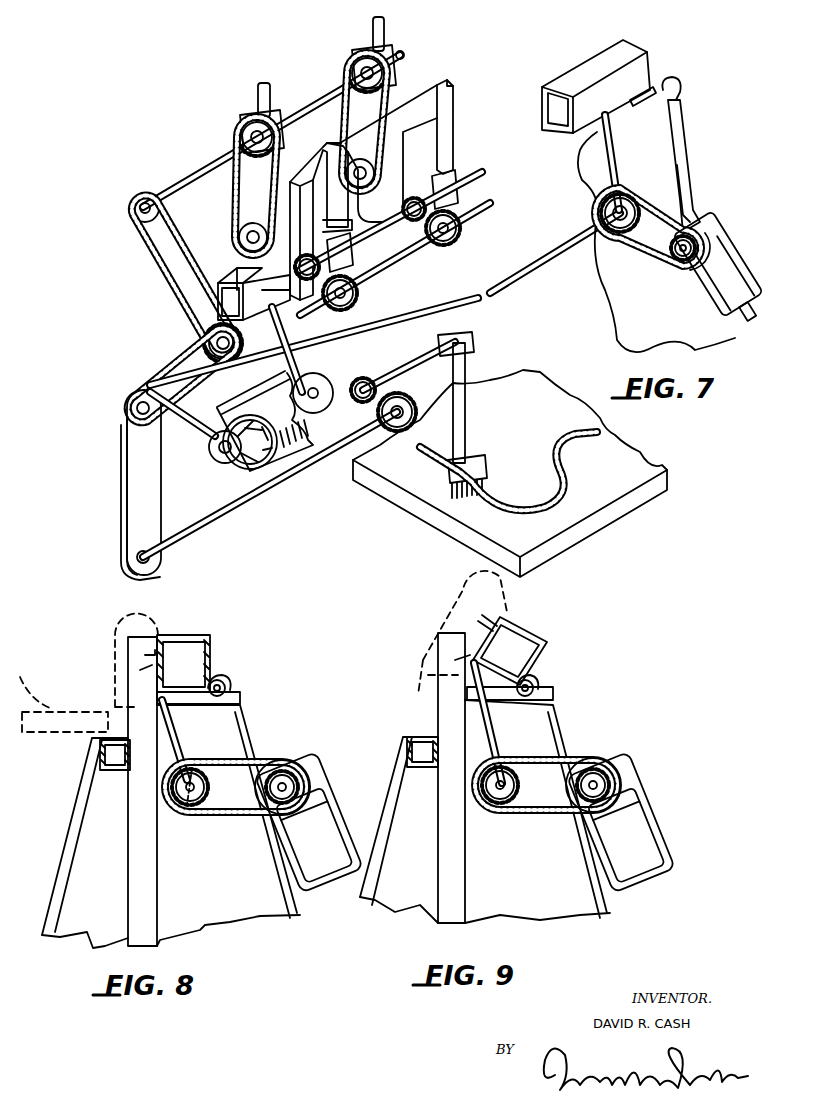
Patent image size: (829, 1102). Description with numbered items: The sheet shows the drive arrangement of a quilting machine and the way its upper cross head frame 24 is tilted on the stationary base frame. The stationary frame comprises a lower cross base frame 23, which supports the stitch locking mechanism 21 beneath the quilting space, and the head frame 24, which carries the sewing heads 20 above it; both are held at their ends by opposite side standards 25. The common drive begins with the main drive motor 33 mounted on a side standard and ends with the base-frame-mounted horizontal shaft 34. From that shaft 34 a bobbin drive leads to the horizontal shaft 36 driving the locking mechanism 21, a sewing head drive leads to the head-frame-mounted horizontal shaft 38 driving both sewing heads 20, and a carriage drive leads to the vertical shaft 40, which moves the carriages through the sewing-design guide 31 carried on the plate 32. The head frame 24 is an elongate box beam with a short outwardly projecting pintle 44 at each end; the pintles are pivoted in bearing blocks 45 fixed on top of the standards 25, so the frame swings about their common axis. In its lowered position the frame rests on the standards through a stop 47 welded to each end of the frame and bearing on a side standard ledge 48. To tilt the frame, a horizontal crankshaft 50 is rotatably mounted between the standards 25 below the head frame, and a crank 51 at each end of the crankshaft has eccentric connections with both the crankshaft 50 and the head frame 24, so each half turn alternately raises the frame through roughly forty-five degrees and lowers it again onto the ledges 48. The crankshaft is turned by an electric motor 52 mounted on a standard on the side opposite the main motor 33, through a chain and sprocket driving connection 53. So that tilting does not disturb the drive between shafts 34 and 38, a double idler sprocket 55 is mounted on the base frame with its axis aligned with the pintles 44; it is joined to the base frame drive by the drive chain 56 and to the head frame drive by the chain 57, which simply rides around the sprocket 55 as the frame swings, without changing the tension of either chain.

In FIG. 7, the sewing head 20 is at (455, 102).
In FIG. 8, the sewing head 20 is at (112, 638).
In FIG. 9, the sewing head 20 is at (450, 606).
In FIG. 7, the locking mechanism 21 is at (455, 172).
In FIG. 8, the lower cross base frame 23 is at (118, 772).
In FIG. 9, the lower cross base frame 23 is at (428, 768).
In FIG. 7, the upper cross head frame 24 is at (228, 266).
In FIG. 8, the upper cross head frame 24 is at (212, 648).
In FIG. 9, the upper cross head frame 24 is at (530, 630).
In FIG. 7, the side standards 25 is at (690, 205).
In FIG. 8, the side standards 25 is at (50, 882).
In FIG. 9, the side standards 25 is at (470, 885).
In FIG. 7, the sewing-design guide 31 is at (554, 433).
In FIG. 7, the plate 32 is at (617, 490).
In FIG. 7, the main drive motor 33 is at (278, 411).
In FIG. 7, the main horizontal shaft 34 is at (377, 280).
In FIG. 7, the horizontal shaft 36 is at (483, 170).
In FIG. 7, the horizontal shaft 38 is at (213, 166).
In FIG. 7, the vertical shaft 40 is at (466, 427).
In FIG. 7, the pintle 44 is at (646, 118).
In FIG. 8, the pintle 44 is at (218, 705).
In FIG. 9, the pintle 44 is at (518, 700).
In FIG. 7, the bearing block 45 is at (674, 82).
In FIG. 8, the bearing block 45 is at (230, 676).
In FIG. 9, the bearing block 45 is at (527, 685).
In FIG. 8, the stop 47 is at (144, 646).
In FIG. 9, the stop 47 is at (493, 612).
In FIG. 8, the ledge 48 is at (144, 676).
In FIG. 9, the ledge 48 is at (455, 647).
In FIG. 7, the crankshaft 50 is at (533, 270).
In FIG. 8, the crankshaft 50 is at (175, 818).
In FIG. 7, the crank 51 is at (292, 343).
In FIG. 8, the crank 51 is at (175, 718).
In FIG. 9, the crank 51 is at (488, 723).
In FIG. 7, the electric motor 52 is at (739, 301).
In FIG. 8, the electric motor 52 is at (319, 850).
In FIG. 9, the electric motor 52 is at (635, 853).
In FIG. 7, the chain and sprocket driving connection 53 is at (650, 252).
In FIG. 8, the chain and sprocket driving connection 53 is at (219, 815).
In FIG. 9, the chain and sprocket driving connection 53 is at (523, 812).
In FIG. 7, the double idler sprocket 55 is at (226, 360).
In FIG. 7, the drive chain 56 is at (174, 352).
In FIG. 7, the chain 57 is at (134, 211).